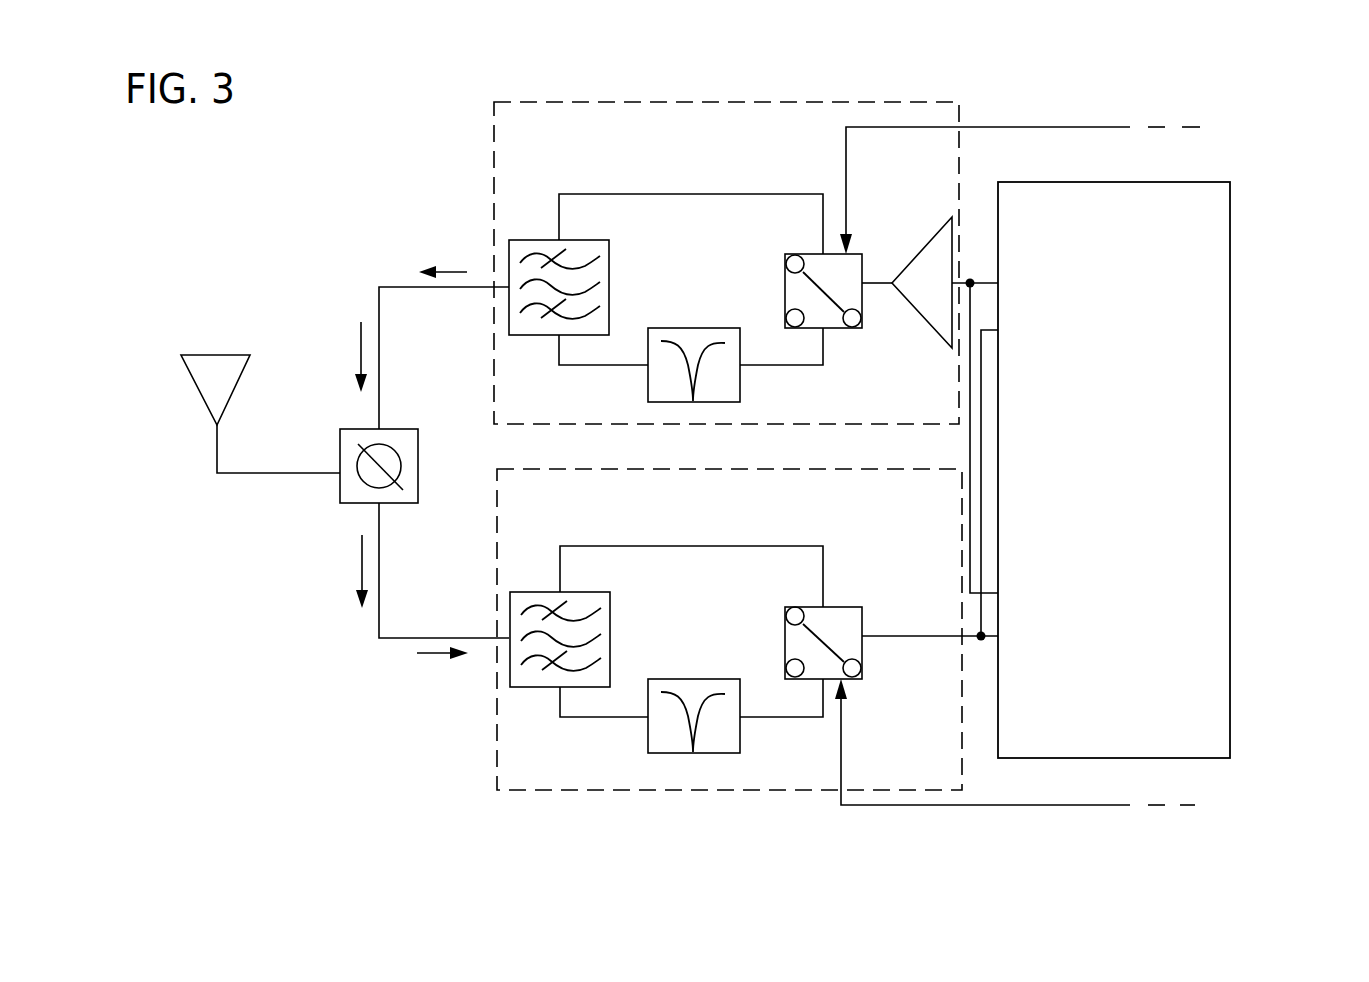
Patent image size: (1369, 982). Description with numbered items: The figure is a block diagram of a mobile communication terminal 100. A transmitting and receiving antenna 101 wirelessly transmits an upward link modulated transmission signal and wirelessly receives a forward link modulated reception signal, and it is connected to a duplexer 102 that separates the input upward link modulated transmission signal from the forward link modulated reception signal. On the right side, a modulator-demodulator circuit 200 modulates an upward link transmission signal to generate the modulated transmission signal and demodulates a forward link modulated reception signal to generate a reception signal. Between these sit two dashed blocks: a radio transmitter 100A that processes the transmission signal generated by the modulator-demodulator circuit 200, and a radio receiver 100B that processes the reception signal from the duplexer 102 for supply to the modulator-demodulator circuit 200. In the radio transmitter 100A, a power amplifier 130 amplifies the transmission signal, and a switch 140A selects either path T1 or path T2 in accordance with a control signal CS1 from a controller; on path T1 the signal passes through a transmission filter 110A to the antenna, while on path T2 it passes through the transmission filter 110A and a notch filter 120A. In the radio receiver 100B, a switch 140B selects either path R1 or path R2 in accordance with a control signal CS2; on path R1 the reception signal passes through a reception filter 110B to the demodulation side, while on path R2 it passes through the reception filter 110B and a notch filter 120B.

The mobile communication terminal 100 is at (1308, 121).
The radio transmitter 100A is at (842, 102).
The radio receiver 100B is at (790, 792).
The transmitting and receiving antenna 101 is at (199, 390).
The duplexer 102 is at (340, 490).
The transmission filter 110A is at (509, 265).
The reception filter 110B is at (510, 610).
The notch filter 120A is at (648, 380).
The notch filter 120B is at (648, 731).
The power amplifier 130 is at (932, 240).
The switch 140A is at (860, 322).
The switch 140B is at (866, 660).
The modulator-demodulator circuit 200 is at (1231, 470).
The path T1 is at (683, 194).
The path T2 is at (768, 366).
The path R1 is at (712, 546).
The path R2 is at (785, 718).
The control signal CS1 is at (1020, 174).
The control signal CS2 is at (1015, 757).